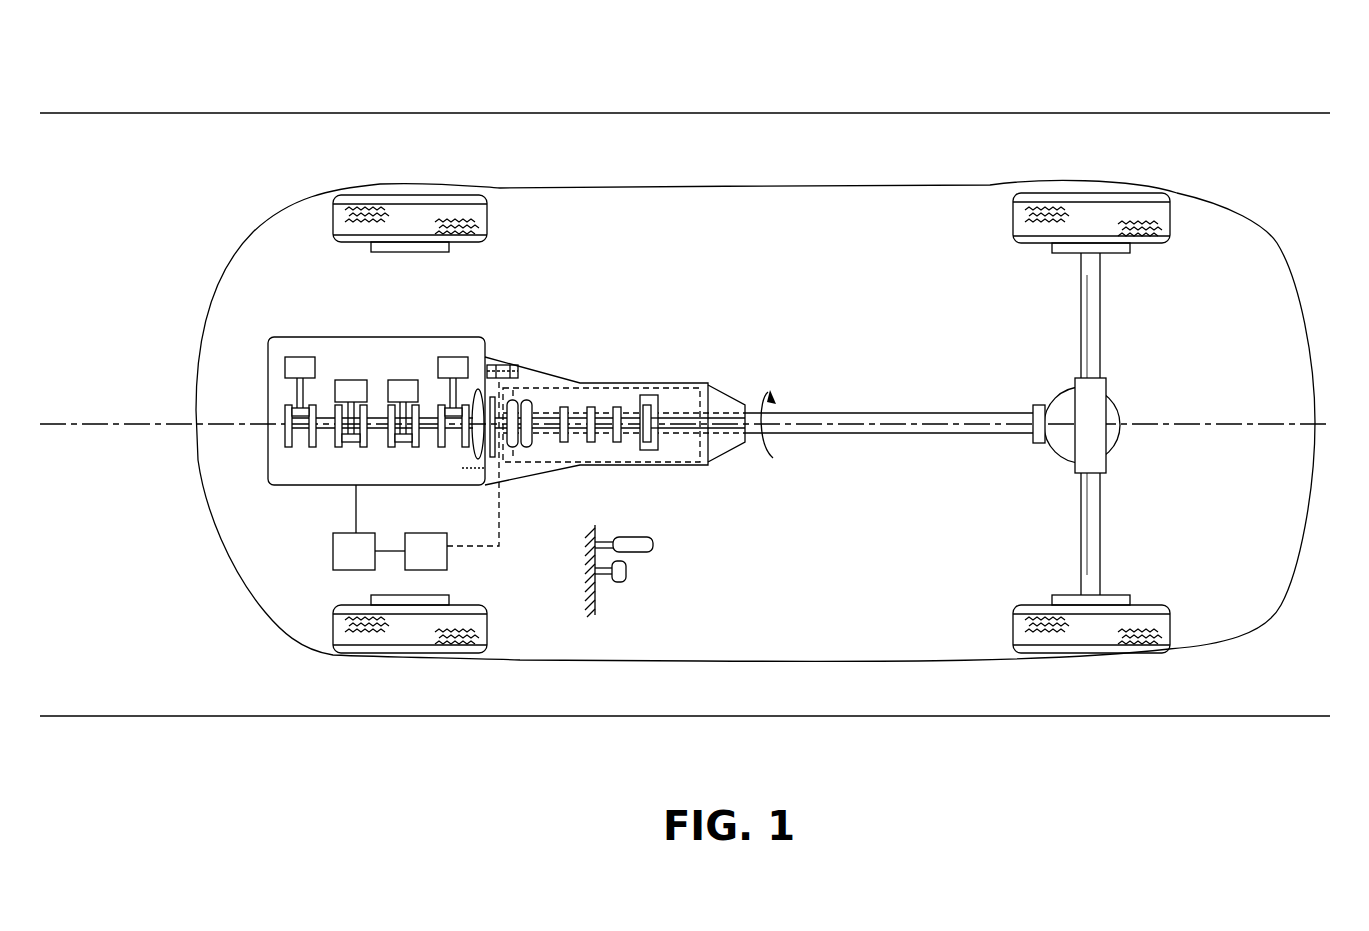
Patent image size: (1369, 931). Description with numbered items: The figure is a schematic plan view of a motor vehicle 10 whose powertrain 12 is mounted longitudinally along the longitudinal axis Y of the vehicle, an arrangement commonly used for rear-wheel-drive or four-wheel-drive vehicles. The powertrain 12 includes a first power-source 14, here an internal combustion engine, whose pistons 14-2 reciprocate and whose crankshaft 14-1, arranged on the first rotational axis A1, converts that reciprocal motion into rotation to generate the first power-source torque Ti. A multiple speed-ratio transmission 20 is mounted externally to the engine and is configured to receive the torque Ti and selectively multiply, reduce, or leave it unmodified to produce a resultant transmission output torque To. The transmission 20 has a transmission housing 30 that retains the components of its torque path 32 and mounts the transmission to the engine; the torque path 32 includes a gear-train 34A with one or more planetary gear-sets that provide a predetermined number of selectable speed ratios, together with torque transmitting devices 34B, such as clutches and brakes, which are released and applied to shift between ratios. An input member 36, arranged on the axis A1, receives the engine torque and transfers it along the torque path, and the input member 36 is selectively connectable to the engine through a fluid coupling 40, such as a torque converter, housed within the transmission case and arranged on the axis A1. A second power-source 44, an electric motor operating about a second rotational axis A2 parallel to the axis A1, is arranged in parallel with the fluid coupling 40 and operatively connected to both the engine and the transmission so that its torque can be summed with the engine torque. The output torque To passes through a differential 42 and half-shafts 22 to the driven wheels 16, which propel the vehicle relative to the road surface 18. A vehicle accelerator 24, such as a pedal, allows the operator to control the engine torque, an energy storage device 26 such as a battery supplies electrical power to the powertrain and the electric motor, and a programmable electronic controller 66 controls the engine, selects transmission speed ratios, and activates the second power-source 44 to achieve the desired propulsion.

The motor vehicle 10 is at (1057, 95).
The powertrain 12 is at (315, 503).
The first power-source 14 is at (350, 337).
The crankshaft 14-1 is at (318, 445).
The pistons 14-2 is at (297, 365).
The driven wheels 16 is at (1108, 210).
The road surface 18 is at (108, 673).
The multiple speed-ratio transmission 20 is at (593, 362).
The half-shaft 22 is at (887, 437).
The vehicle accelerator 24 is at (655, 545).
The energy storage device 26 is at (368, 567).
The transmission housing 30 is at (560, 465).
The torque path 32 is at (542, 390).
The gear-train 34A is at (620, 440).
The torque transmitting devices 34B is at (703, 442).
The input member 36 is at (542, 437).
The fluid coupling 40 is at (512, 400).
The differential 42 is at (1107, 385).
The second power-source 44 is at (483, 410).
The programmable electronic controller 66 is at (440, 567).
The first rotational axis A1 is at (453, 413).
The second rotational axis A2 is at (523, 358).
The first power-source torque Ti is at (467, 443).
The transmission output torque To is at (773, 447).
The longitudinal axis Y is at (93, 422).